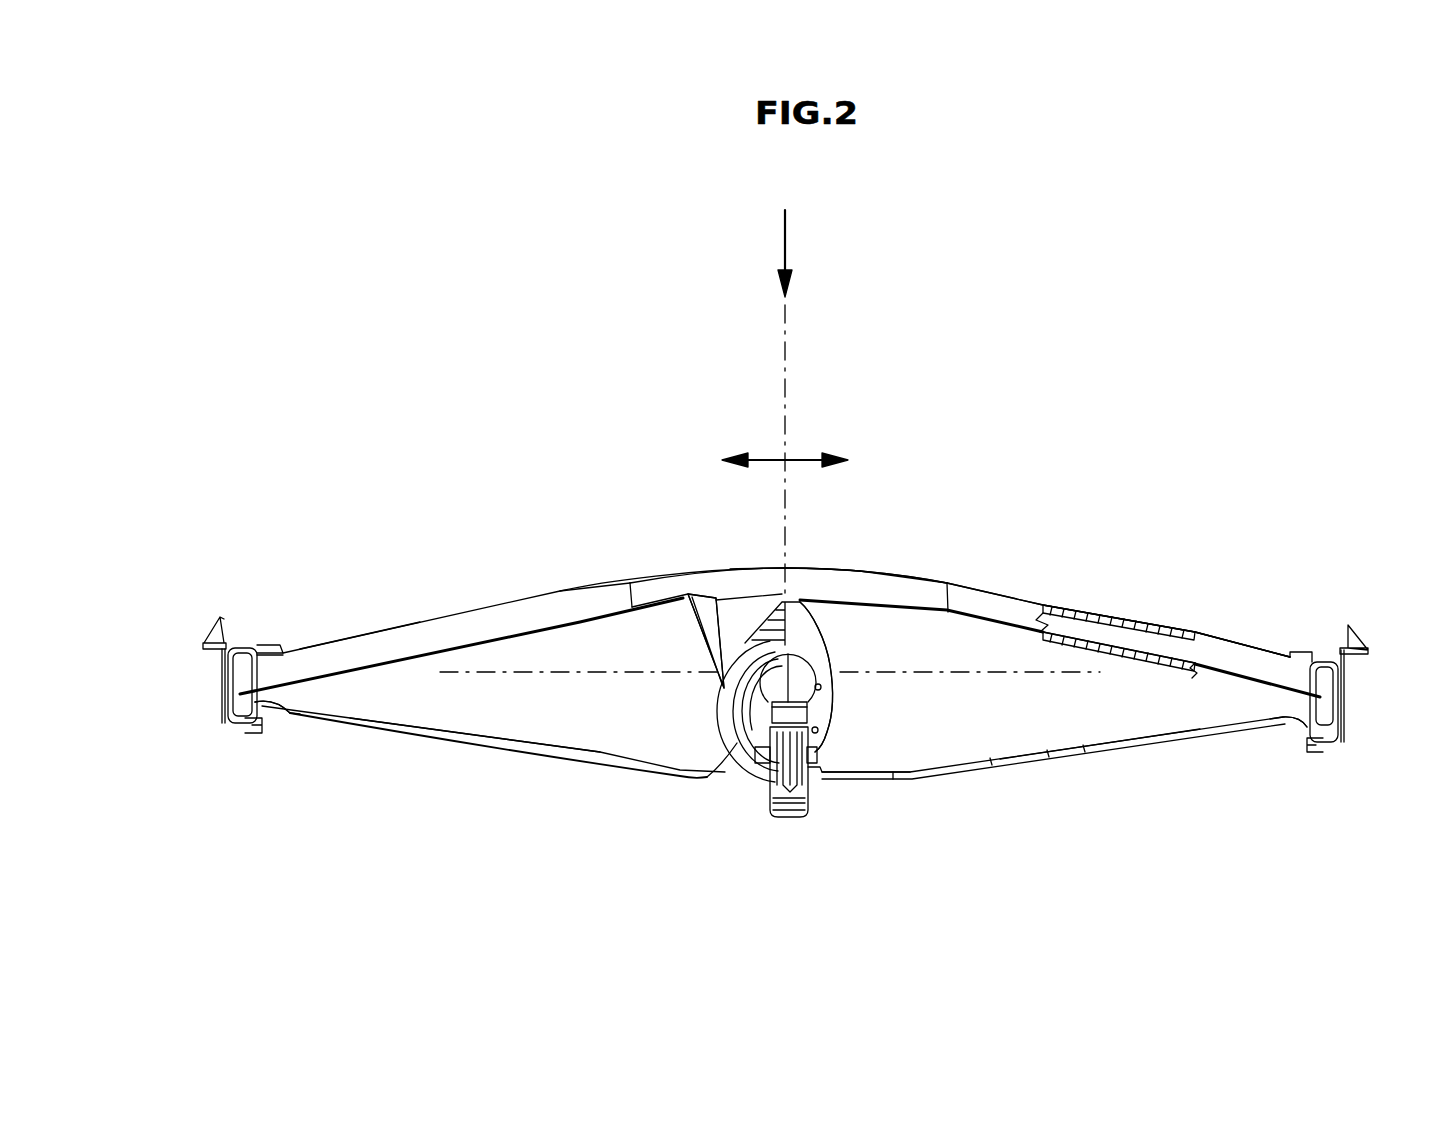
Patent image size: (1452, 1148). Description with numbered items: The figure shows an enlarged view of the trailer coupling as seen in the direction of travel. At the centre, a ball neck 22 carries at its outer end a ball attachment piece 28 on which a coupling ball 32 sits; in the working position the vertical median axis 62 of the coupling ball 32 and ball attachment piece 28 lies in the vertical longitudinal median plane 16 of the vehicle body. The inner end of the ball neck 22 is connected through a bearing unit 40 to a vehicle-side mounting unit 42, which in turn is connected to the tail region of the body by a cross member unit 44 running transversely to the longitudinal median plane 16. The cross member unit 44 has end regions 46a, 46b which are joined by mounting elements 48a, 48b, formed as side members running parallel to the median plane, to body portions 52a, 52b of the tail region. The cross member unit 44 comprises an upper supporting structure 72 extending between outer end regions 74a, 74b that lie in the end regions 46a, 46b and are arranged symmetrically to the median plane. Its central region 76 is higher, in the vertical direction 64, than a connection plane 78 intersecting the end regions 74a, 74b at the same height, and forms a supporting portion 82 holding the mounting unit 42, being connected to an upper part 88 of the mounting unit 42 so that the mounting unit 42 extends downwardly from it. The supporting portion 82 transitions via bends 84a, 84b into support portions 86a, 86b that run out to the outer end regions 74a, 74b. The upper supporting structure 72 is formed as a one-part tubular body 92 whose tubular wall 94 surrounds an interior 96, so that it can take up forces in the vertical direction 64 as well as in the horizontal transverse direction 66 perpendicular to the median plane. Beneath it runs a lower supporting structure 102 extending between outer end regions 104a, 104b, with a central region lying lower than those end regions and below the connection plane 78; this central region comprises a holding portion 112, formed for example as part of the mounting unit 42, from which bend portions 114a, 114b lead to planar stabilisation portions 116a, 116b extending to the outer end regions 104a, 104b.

The longitudinal median plane 16 is at (785, 318).
The ball neck 22 is at (785, 818).
The ball attachment piece 28 is at (782, 717).
The coupling ball 32 is at (793, 675).
The bearing unit 40 is at (835, 697).
The mounting unit 42 is at (716, 625).
The cross member unit 44 is at (925, 568).
The end region 46a is at (257, 716).
The end region 46b is at (1330, 740).
The mounting element 48a is at (235, 691).
The mounting element 48b is at (1325, 688).
The body portion 52a is at (214, 647).
The body portion 52b is at (1362, 652).
The median axis 62 is at (785, 384).
The vertical direction 64 is at (785, 240).
The horizontal transverse direction 66 is at (773, 460).
The upper supporting structure 72 is at (974, 578).
The outer end region 74a is at (240, 688).
The outer end region 74b is at (1320, 688).
The central region 76 is at (822, 584).
The connection plane 78 is at (1057, 660).
The supporting portion 82 is at (745, 581).
The bend 84a is at (663, 584).
The bend 84b is at (873, 590).
The support portion 86a is at (354, 657).
The support portion 86b is at (1210, 657).
The upper part 88 is at (713, 613).
The tubular body 92 is at (1023, 584).
The tubular wall 94 is at (1153, 633).
The interior 96 is at (1113, 640).
The lower supporting structure 102 is at (517, 755).
The outer end region 104a is at (282, 716).
The outer end region 104b is at (1292, 724).
The holding portion 112 is at (755, 772).
The bend portion 114a is at (715, 768).
The bend portion 114b is at (838, 768).
The stabilisation portion 116a is at (425, 737).
The stabilisation portion 116b is at (1115, 741).